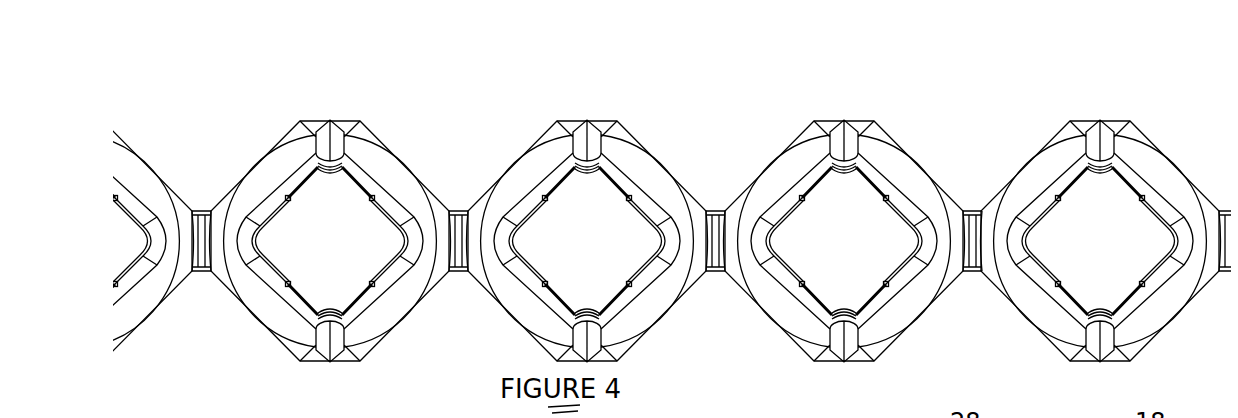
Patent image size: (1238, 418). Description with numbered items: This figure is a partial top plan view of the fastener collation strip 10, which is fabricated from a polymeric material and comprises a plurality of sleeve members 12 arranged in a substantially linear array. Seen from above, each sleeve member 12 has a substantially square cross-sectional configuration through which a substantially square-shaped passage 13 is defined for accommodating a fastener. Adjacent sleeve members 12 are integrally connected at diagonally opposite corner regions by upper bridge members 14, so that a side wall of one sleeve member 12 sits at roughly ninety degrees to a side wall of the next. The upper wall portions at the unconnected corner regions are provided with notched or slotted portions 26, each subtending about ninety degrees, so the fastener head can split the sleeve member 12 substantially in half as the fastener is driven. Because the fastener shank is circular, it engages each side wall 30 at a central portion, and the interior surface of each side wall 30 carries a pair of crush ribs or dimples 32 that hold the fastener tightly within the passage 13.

The fastener collation strip 10 is at (619, 221).
The sleeve member 12 is at (518, 185).
The passage 13 is at (565, 235).
The upper bridge member 14 is at (717, 247).
The notched or slotted portion 26 is at (331, 137).
The side wall 30 is at (273, 187).
The crush ribs or dimples 32 is at (373, 199).